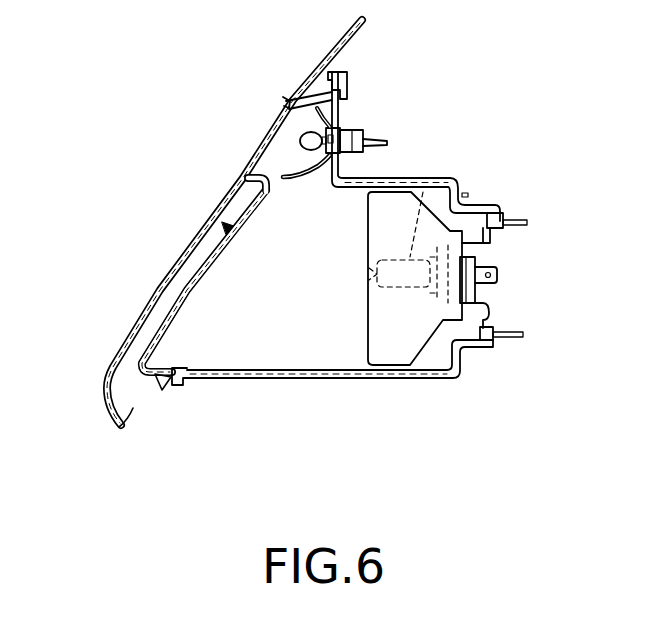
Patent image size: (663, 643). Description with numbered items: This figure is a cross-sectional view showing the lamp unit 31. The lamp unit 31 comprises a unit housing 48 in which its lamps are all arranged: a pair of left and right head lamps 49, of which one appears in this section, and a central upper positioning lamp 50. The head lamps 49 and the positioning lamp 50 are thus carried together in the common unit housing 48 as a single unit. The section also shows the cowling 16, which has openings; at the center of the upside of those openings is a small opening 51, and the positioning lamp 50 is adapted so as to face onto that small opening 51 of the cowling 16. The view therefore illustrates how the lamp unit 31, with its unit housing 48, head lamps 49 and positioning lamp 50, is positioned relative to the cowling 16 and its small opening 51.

The cowling 16 is at (160, 288).
The lamp unit 31 is at (217, 215).
The small opening 51 is at (240, 178).
The head lamps 49 is at (423, 178).
The positioning lamp 50 is at (300, 138).
The unit housing 48 is at (318, 378).